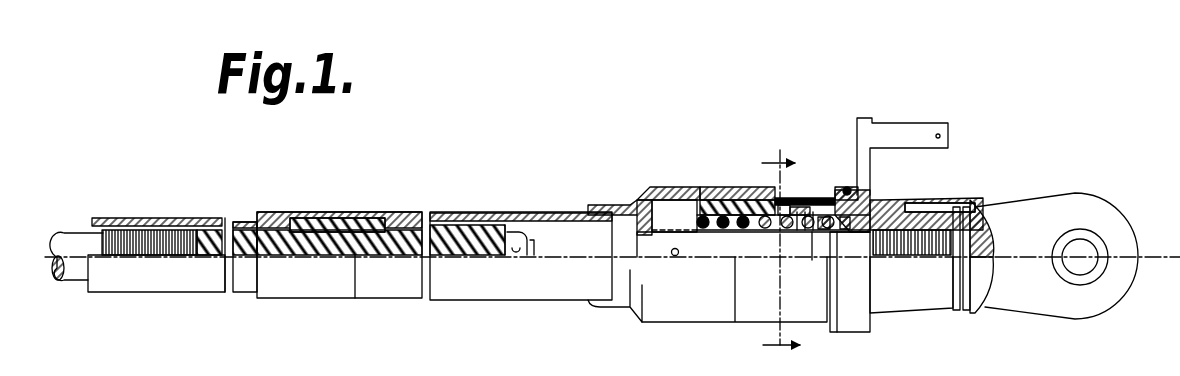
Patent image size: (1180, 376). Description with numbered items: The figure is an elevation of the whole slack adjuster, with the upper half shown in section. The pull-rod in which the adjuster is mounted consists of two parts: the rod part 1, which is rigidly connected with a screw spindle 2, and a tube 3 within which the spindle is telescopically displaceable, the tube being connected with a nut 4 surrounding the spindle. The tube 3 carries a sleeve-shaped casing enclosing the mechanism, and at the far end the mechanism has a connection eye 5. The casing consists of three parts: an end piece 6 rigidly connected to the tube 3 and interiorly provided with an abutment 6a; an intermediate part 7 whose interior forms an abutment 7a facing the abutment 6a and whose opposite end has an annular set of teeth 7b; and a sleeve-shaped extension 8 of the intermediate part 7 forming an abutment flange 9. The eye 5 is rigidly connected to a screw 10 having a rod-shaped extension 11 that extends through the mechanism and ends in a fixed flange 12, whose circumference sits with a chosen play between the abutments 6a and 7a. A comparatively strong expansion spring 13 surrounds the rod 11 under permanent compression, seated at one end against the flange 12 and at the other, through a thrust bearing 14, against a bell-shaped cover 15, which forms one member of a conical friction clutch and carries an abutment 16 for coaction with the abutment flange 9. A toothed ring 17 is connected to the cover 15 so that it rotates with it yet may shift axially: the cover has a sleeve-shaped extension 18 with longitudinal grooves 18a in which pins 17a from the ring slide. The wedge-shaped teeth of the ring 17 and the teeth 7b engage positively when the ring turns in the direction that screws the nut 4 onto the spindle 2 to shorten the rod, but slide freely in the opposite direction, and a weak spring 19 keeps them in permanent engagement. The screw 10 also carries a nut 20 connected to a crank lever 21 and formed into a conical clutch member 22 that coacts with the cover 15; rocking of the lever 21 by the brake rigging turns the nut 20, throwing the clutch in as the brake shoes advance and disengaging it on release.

The rod part 1 is at (83, 238).
The screw spindle 2 is at (472, 218).
The tube 3 is at (535, 215).
The nut 4 is at (330, 216).
The connection eye 5 is at (1030, 215).
The end piece 6 is at (679, 190).
The abutment 6a is at (639, 205).
The intermediate part 7 is at (757, 193).
The abutment 7a is at (738, 190).
The annular set of teeth 7b is at (766, 234).
The sleeve-shaped extension 8 is at (750, 322).
The abutment flange 9 is at (845, 190).
The screw 10 is at (936, 300).
The rod-shaped extension 11 is at (813, 262).
The fixed flange 12 is at (658, 253).
The expansion spring 13 is at (700, 250).
The thrust bearing 14 is at (846, 244).
The bell-shaped cover 15 is at (877, 249).
The abutment 16 is at (875, 192).
The toothed ring 17 is at (796, 235).
The pins 17a is at (799, 195).
The sleeve-shaped extension 18 is at (815, 202).
The longitudinal grooves 18a is at (803, 195).
The spring 19 is at (814, 238).
The nut 20 is at (950, 195).
The crank lever 21 is at (870, 122).
The conical clutch member 22 is at (880, 202).